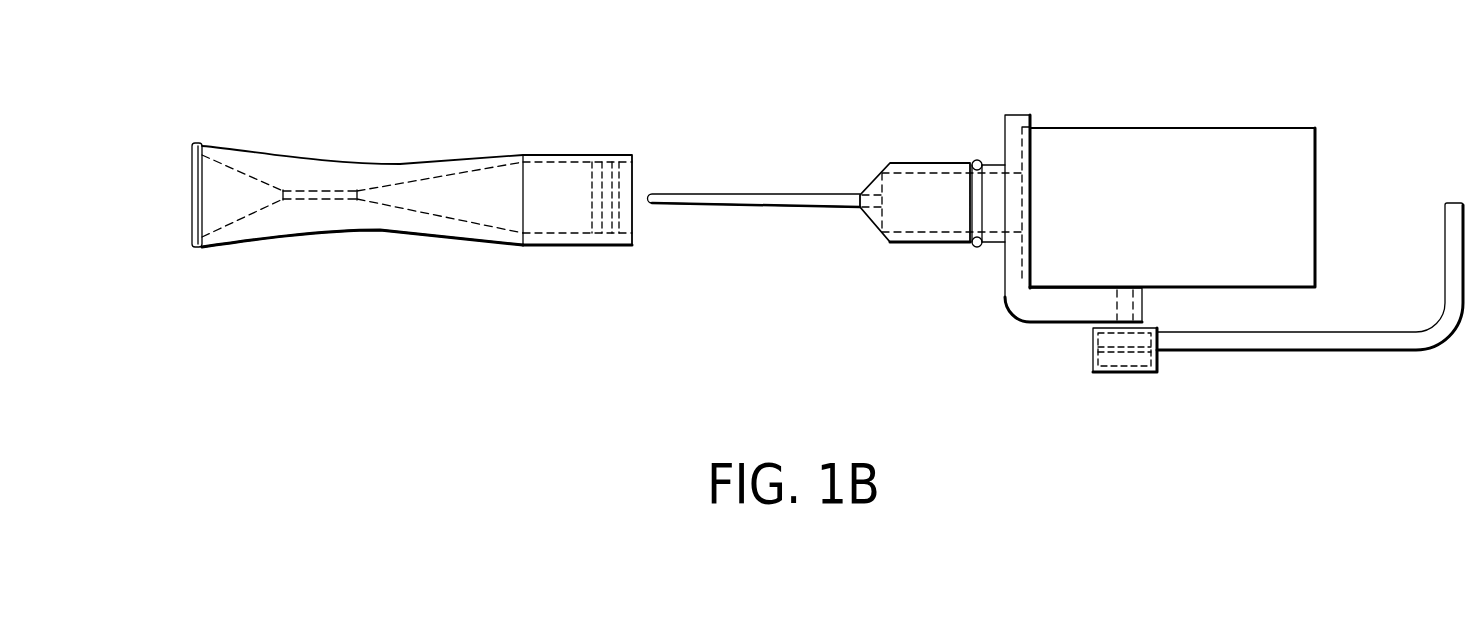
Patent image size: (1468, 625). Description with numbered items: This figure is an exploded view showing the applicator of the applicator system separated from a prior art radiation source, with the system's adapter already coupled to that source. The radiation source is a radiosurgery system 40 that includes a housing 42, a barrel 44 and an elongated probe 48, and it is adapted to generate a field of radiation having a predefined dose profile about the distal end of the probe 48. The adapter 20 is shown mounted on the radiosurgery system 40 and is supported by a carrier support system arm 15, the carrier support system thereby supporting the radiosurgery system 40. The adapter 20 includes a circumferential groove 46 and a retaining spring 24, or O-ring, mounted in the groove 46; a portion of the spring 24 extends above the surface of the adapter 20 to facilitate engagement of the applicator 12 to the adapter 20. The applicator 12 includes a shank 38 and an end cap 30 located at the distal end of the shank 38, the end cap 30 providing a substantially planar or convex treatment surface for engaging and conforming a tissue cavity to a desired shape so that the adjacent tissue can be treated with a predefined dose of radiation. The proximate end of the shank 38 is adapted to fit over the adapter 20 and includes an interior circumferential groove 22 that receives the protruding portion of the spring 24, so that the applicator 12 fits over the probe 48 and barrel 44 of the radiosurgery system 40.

The applicator 12 is at (393, 170).
The end cap 30 is at (193, 213).
The shank 38 is at (398, 218).
The circumferential groove 22 is at (602, 235).
The elongated probe 48 is at (757, 192).
The barrel 44 is at (915, 188).
The circumferential groove 46 is at (973, 145).
The retaining spring 24 is at (977, 250).
The radiosurgery system 40 is at (1161, 212).
The housing 42 is at (1296, 140).
The adapter 20 is at (1013, 307).
The carrier support system arm 15 is at (1322, 340).